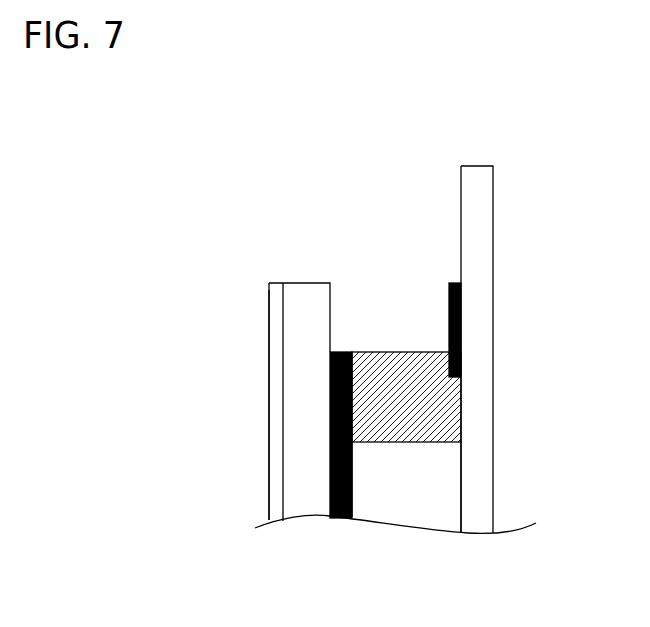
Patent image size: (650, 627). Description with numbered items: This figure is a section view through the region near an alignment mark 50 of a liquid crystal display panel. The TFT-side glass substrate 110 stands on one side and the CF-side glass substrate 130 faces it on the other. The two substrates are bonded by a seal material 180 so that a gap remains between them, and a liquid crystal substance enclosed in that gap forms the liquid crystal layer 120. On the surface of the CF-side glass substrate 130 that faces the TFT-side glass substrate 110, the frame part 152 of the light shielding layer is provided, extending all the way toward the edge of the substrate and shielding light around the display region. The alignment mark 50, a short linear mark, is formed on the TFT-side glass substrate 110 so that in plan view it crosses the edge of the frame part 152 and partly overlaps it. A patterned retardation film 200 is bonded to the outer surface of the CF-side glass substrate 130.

The alignment mark 50 is at (461, 323).
The TFT-side glass substrate 110 is at (493, 200).
The liquid crystal layer 120 is at (422, 477).
The CF-side glass substrate 130 is at (302, 290).
The frame part 152 is at (333, 518).
The seal material 180 is at (385, 353).
The patterned retardation film 200 is at (274, 365).